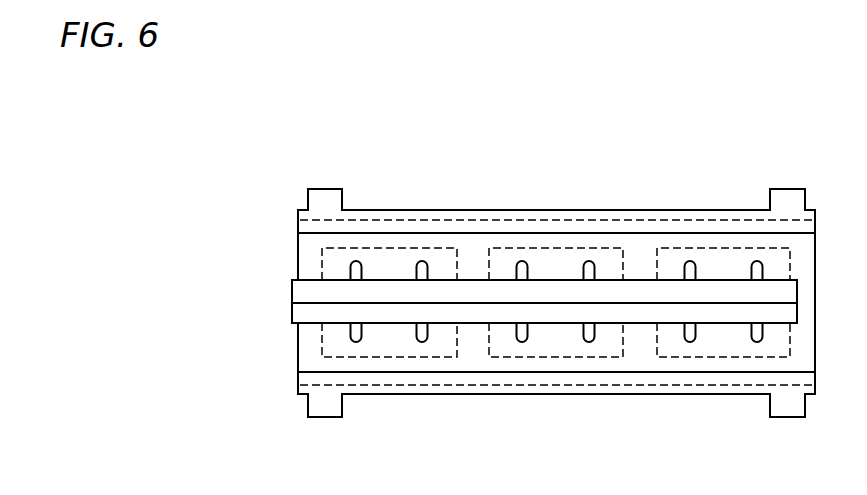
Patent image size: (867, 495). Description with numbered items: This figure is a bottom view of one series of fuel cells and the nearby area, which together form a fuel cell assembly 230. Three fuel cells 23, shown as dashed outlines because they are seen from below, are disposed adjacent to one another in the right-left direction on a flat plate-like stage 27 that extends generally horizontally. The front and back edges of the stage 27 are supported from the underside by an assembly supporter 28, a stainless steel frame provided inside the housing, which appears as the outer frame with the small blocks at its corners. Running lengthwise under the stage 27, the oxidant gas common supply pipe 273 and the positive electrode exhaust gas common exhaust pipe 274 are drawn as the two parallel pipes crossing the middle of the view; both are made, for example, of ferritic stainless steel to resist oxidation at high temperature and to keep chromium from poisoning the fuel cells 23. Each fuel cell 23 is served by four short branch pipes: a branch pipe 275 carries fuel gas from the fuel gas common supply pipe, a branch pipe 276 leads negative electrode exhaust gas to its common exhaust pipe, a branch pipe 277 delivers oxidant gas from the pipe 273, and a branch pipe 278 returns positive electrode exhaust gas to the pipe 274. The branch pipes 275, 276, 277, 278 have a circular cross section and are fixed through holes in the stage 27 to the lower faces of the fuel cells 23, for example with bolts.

The fuel cell assembly 230 is at (482, 289).
The fuel cell 23 is at (395, 248).
The stage 27 is at (298, 362).
The assembly supporter 28 is at (298, 222).
The oxidant gas common supply pipe 273 is at (292, 290).
The positive electrode exhaust gas common exhaust pipe 274 is at (292, 316).
The branch pipe 275 is at (356, 259).
The branch pipe 276 is at (356, 343).
The branch pipe 277 is at (422, 259).
The branch pipe 278 is at (422, 343).